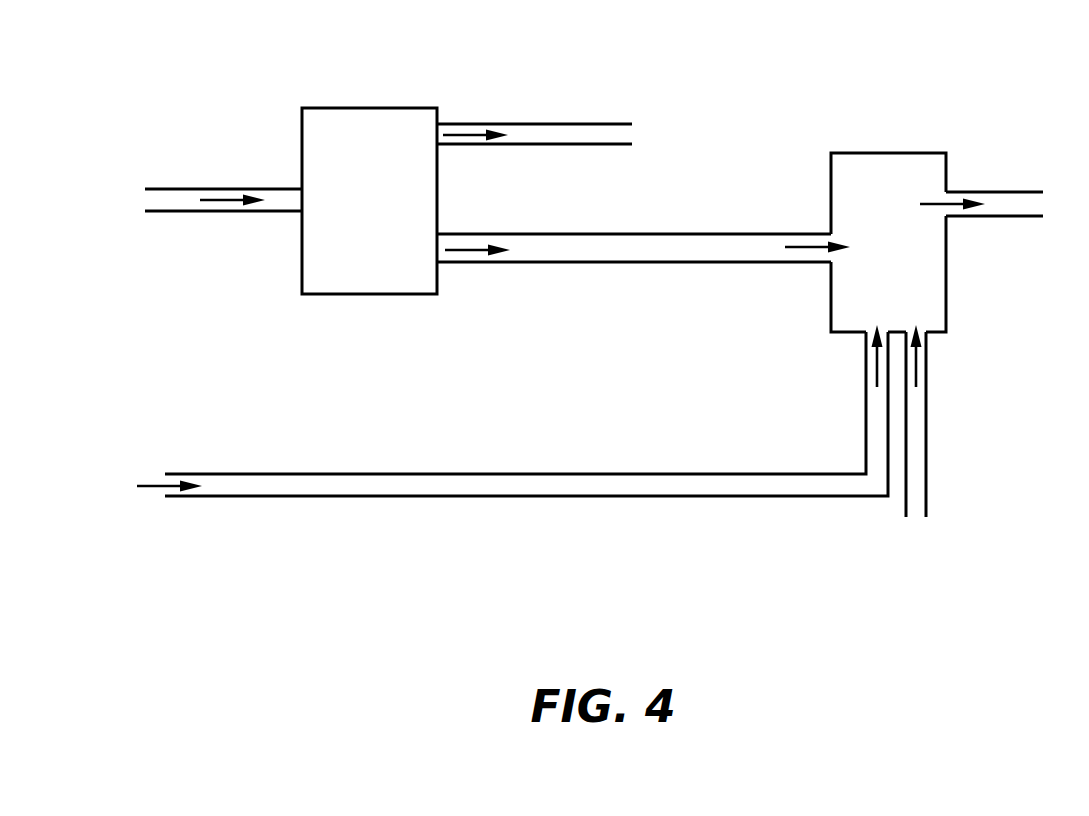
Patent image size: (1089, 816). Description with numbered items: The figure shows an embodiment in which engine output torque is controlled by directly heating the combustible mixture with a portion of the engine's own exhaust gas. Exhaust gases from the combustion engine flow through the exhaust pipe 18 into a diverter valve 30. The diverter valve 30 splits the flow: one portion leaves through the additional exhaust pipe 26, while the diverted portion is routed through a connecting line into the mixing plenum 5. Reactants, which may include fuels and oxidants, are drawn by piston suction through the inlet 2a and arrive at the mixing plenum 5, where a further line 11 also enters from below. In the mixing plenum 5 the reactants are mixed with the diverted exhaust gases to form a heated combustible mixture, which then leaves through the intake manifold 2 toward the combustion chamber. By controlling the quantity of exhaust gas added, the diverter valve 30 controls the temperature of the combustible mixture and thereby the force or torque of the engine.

The intake manifold 2 is at (992, 222).
The inlet 2a is at (322, 503).
The mixing plenum 5 is at (888, 242).
The supply line 11 is at (927, 372).
The exhaust pipe 18 is at (192, 183).
The additional exhaust pipe 26 is at (527, 110).
The diverter valve 30 is at (331, 302).